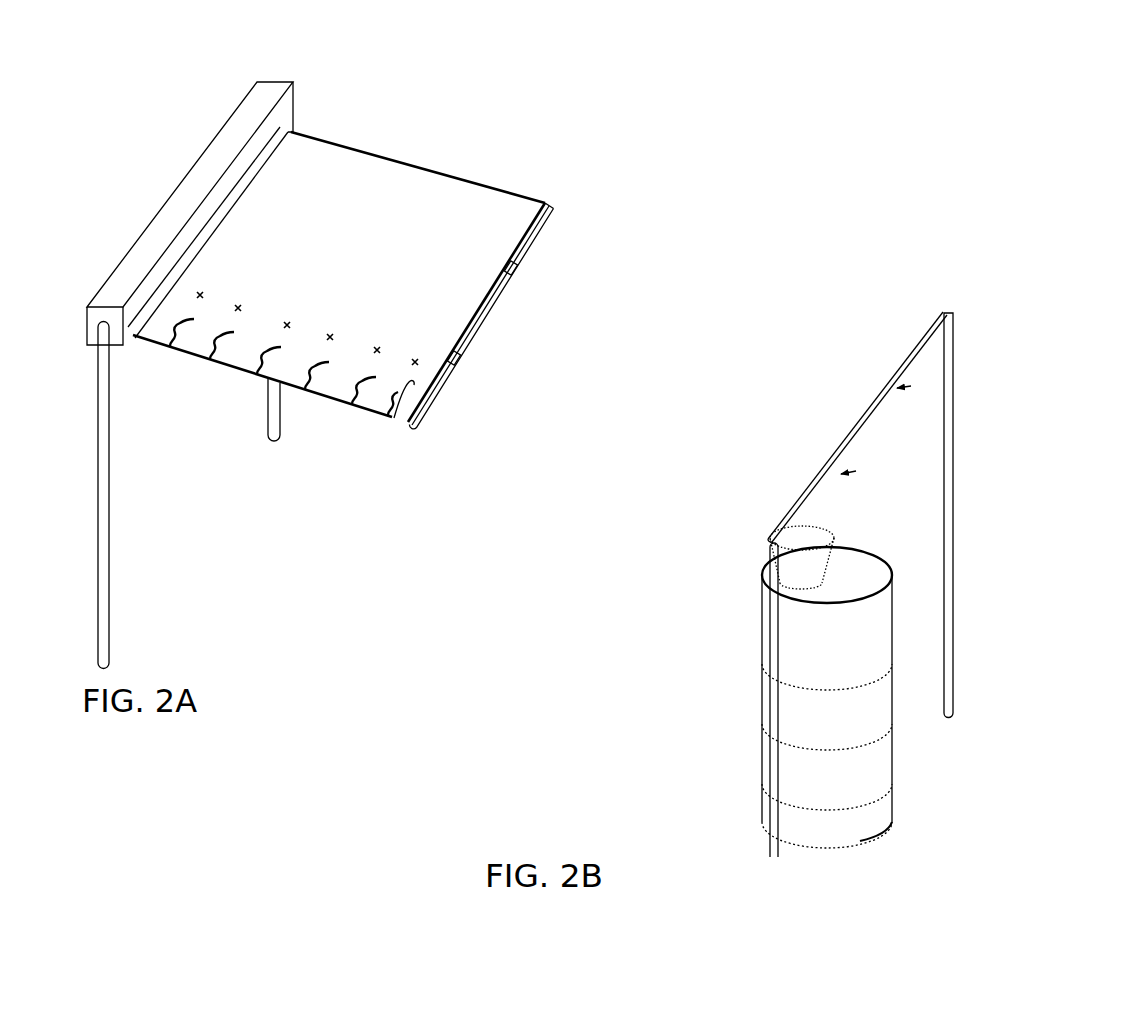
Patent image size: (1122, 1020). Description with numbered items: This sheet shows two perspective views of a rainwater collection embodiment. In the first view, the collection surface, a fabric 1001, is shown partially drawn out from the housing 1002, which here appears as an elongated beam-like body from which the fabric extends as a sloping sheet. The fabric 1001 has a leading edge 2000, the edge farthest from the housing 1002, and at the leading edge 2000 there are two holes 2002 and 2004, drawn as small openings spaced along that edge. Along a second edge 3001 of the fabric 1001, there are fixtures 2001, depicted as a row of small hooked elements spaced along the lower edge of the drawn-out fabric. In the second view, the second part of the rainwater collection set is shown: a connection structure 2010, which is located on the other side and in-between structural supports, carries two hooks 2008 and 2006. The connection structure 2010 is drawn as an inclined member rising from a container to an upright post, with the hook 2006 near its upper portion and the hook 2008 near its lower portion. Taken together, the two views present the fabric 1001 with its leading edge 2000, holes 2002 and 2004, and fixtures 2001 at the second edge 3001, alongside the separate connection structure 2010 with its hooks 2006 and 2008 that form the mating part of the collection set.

In FIG. 2A, the fabric 1001 is at (436, 130).
In FIG. 2A, the housing 1002 is at (170, 375).
In FIG. 2A, the leading edge 2000 is at (542, 198).
In FIG. 2A, the fixtures 2001 is at (342, 414).
In FIG. 2A, the hole 2002 is at (527, 274).
In FIG. 2A, the hole 2004 is at (518, 381).
In FIG. 2A, the second edge 3001 is at (235, 368).
In FIG. 2B, the hook 2006 is at (886, 379).
In FIG. 2B, the hook 2008 is at (816, 476).
In FIG. 2B, the connection structure 2010 is at (893, 408).